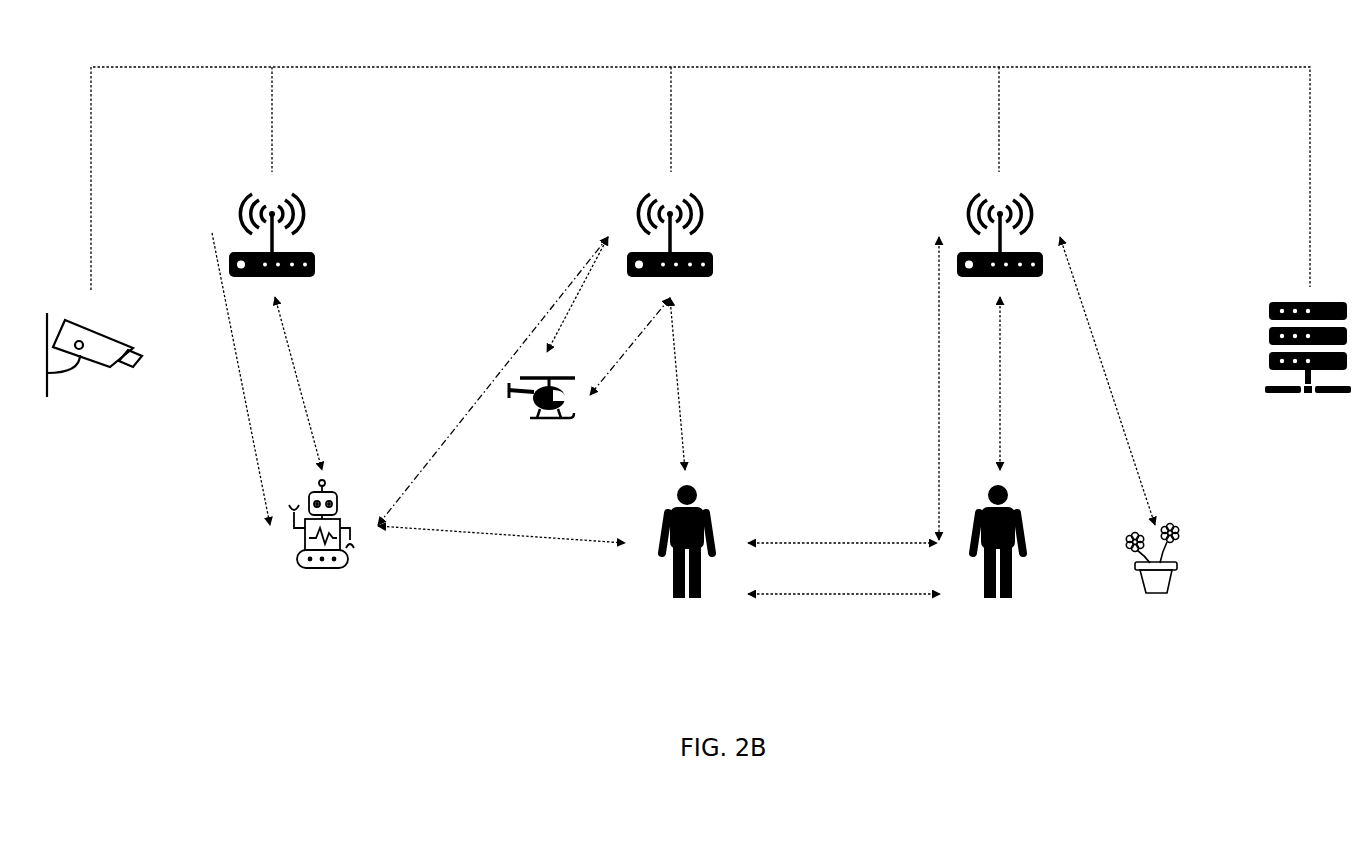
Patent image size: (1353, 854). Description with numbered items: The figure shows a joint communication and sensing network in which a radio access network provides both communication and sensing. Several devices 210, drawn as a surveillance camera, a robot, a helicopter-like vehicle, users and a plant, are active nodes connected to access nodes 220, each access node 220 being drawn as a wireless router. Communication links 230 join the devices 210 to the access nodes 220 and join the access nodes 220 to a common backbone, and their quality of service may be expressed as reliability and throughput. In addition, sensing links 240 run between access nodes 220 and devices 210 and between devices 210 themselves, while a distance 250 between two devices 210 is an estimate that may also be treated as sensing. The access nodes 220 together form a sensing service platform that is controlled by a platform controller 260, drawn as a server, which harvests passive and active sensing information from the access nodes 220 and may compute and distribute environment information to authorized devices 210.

The device 210 is at (613, 471).
The access node 220 is at (661, 234).
The communication link 230 is at (700, 253).
The sensing link 240 is at (674, 388).
The distance 250 is at (844, 615).
The platform controller 260 is at (1308, 371).